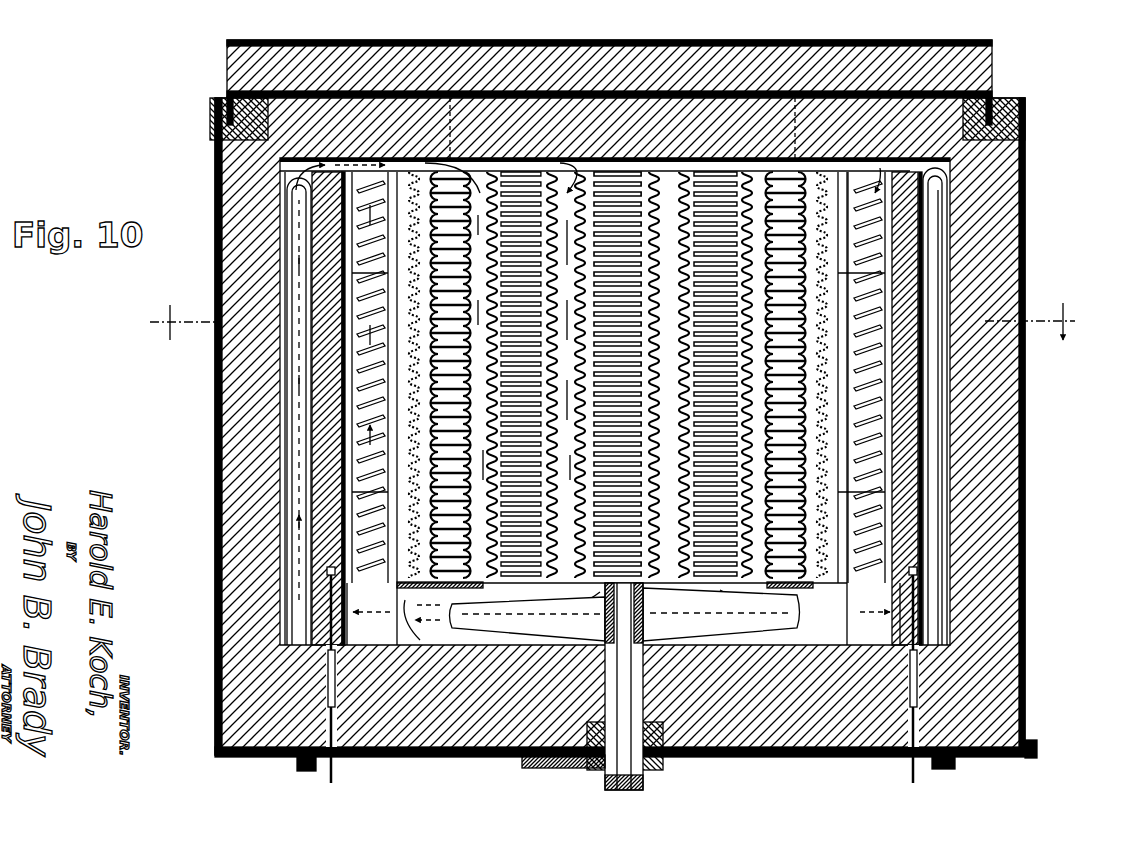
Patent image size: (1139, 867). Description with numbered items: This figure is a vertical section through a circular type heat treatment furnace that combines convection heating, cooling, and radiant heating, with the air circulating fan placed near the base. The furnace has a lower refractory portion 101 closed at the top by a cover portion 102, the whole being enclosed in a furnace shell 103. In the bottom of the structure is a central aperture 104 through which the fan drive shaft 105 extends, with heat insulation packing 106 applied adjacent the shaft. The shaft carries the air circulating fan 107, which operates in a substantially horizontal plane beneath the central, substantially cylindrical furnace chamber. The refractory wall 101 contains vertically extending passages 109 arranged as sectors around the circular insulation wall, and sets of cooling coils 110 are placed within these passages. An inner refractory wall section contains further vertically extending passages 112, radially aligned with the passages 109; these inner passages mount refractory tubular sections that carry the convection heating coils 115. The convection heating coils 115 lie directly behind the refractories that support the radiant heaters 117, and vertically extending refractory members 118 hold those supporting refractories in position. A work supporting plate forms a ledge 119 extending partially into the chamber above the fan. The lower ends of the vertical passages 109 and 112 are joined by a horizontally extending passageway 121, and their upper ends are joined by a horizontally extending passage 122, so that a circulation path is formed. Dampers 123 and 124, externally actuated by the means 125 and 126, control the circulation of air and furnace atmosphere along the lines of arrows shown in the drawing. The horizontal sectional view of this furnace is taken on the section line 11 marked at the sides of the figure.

The lower refractory portion 101 is at (1000, 430).
The cover portion 102 is at (962, 66).
The furnace shell 103 is at (215, 472).
The central aperture 104 is at (560, 766).
The fan drive shaft 105 is at (640, 782).
The heat insulation packing 106 is at (690, 772).
The air circulating fan 107 is at (505, 631).
The vertically extending passages 109 is at (940, 262).
The cooling coils 110 is at (300, 435).
The vertically extending passages 112 is at (905, 180).
The convection heating coils 115 is at (358, 180).
The radiant heaters 117 is at (720, 180).
The vertically extending refractory members 118 is at (665, 178).
The ledge 119 is at (812, 600).
The horizontally extending passageway 121 is at (905, 630).
The horizontally extending passage 122 is at (314, 160).
The damper 123 is at (330, 610).
The damper 124 is at (920, 622).
The external actuator 125 is at (337, 776).
The external actuator 126 is at (910, 770).
The section line 11 is at (616, 321).